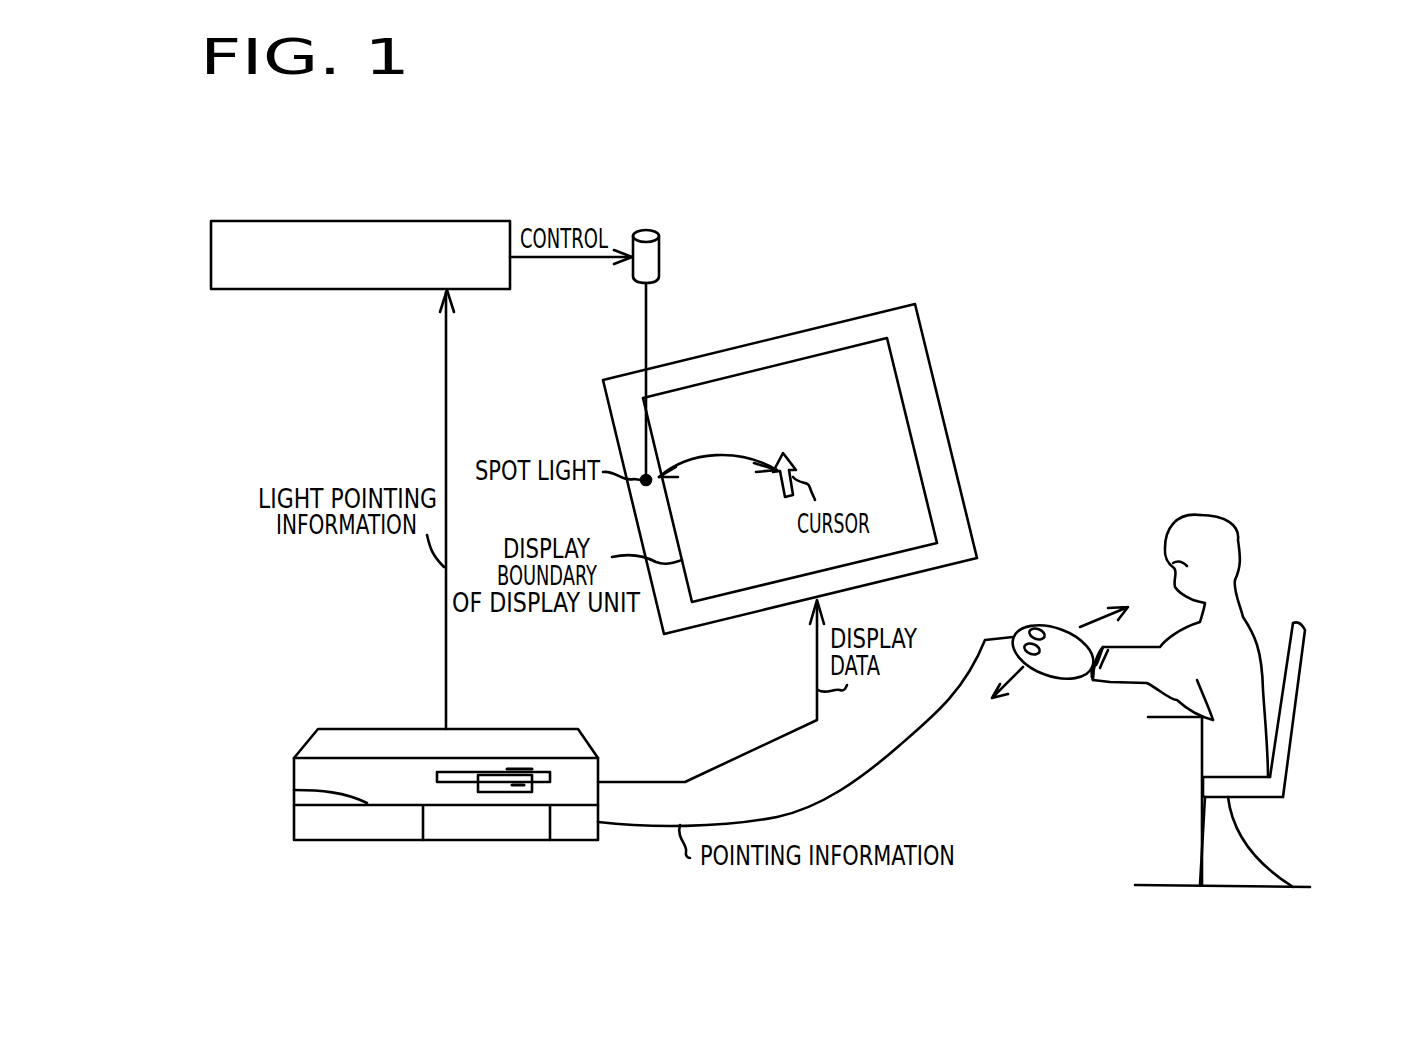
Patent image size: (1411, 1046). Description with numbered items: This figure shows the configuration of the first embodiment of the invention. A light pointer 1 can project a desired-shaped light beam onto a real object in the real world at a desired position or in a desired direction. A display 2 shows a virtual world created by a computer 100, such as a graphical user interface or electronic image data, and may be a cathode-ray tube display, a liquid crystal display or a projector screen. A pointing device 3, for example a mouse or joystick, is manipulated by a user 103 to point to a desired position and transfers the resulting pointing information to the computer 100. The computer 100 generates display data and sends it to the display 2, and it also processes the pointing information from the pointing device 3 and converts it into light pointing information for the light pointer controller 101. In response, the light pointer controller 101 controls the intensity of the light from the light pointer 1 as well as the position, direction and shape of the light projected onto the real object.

The light pointer 1 is at (647, 229).
The display 2 is at (838, 363).
The pointing device 3 is at (1055, 670).
The computer 100 is at (485, 829).
The light pointer controller 101 is at (355, 220).
The user 103 is at (1225, 543).